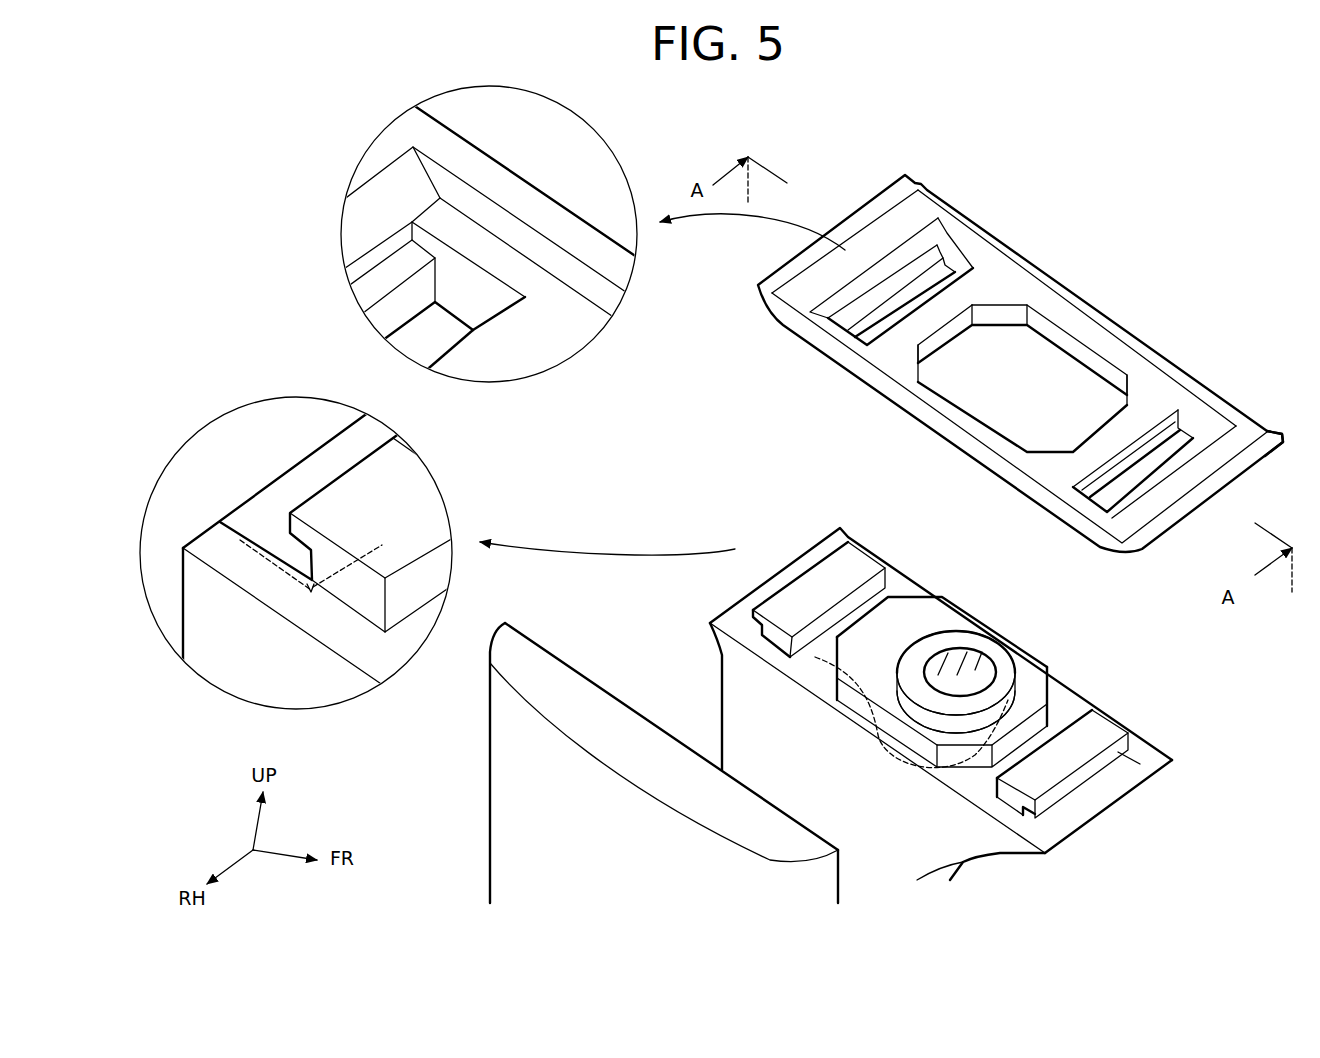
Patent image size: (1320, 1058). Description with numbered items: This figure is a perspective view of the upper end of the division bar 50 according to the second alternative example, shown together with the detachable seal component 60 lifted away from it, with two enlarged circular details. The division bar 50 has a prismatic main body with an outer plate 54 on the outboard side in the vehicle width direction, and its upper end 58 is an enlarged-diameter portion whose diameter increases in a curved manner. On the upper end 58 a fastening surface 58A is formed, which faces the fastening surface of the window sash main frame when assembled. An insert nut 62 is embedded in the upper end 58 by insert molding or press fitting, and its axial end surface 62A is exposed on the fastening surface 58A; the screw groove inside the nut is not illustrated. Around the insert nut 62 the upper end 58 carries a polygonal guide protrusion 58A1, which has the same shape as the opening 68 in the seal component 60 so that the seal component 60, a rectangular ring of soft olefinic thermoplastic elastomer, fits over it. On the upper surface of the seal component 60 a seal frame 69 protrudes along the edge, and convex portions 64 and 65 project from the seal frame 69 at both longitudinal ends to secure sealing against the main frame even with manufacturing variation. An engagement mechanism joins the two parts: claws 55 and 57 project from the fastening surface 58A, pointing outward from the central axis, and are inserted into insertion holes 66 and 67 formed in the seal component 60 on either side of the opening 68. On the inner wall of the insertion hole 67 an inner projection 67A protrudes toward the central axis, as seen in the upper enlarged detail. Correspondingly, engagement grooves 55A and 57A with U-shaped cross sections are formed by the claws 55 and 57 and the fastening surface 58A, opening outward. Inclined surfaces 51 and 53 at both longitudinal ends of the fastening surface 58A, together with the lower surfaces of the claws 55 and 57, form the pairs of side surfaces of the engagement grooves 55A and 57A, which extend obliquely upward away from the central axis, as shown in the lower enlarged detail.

The division bar 50 is at (1068, 891).
The inclined surface 51 is at (1085, 802).
The inclined surface 53 is at (808, 558).
The outer plate 54 is at (573, 663).
The claw 55 is at (1095, 725).
The engagement groove 55A is at (1060, 822).
The claw 57 is at (861, 566).
The engagement groove 57A is at (752, 632).
The upper end 58 is at (988, 857).
The fastening surface 58A is at (898, 582).
The guide protrusion 58A1 is at (832, 658).
The seal component 60 is at (1128, 332).
The insert nut 62 is at (1008, 700).
The axial end surface 62A is at (965, 642).
The convex portion 64 is at (1273, 432).
The convex portion 65 is at (880, 203).
The insertion hole 66 is at (1188, 425).
The insertion hole 67 is at (958, 267).
The inner projection 67A is at (393, 275).
The opening 68 is at (1047, 330).
The seal frame 69 is at (1098, 322).